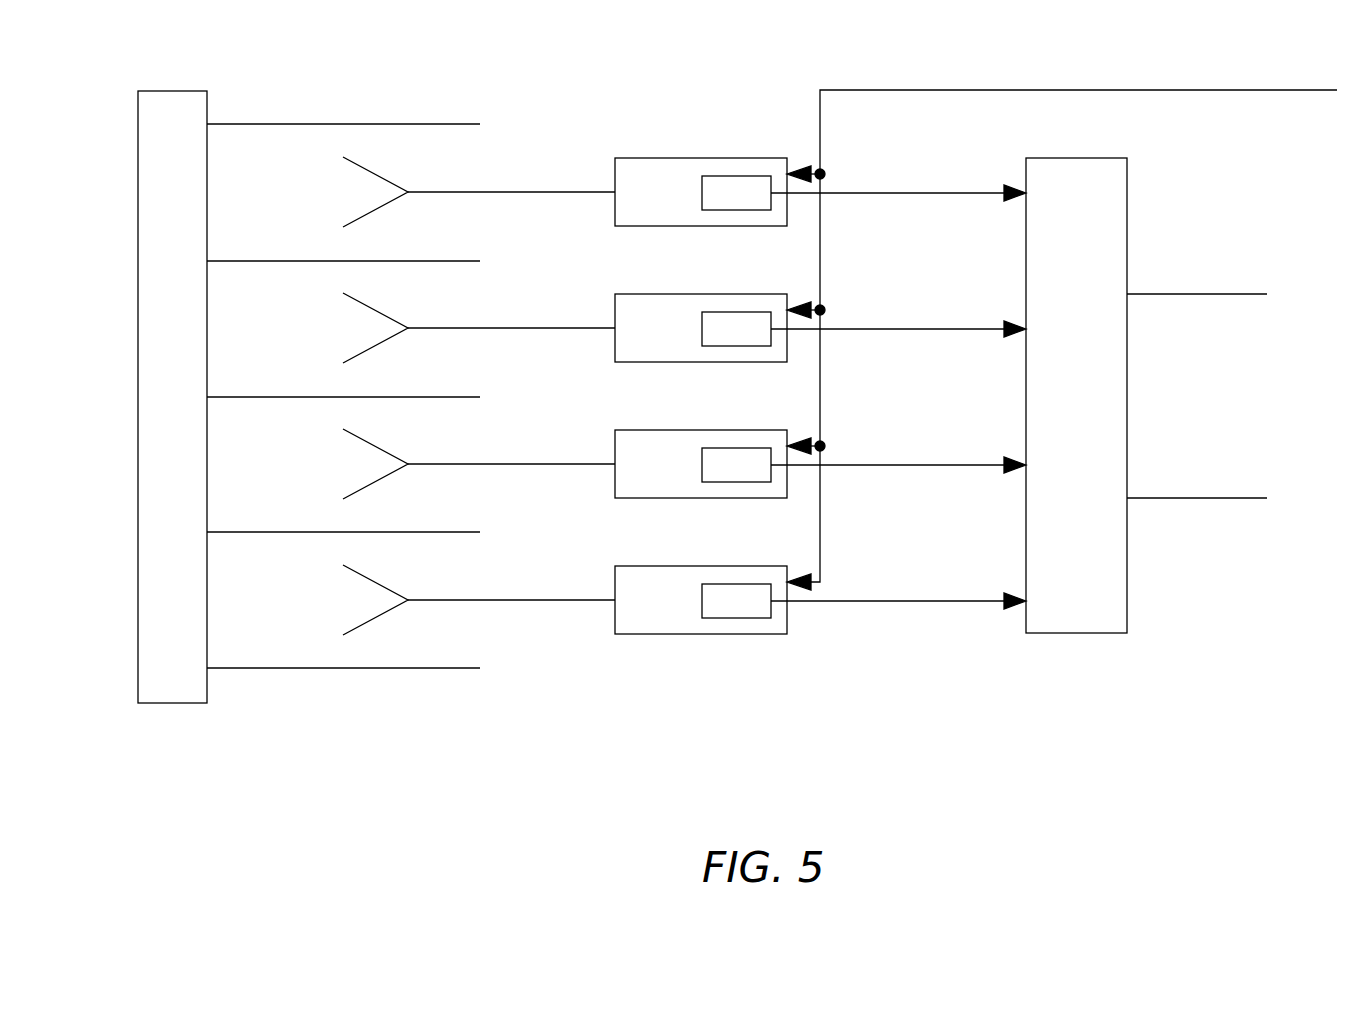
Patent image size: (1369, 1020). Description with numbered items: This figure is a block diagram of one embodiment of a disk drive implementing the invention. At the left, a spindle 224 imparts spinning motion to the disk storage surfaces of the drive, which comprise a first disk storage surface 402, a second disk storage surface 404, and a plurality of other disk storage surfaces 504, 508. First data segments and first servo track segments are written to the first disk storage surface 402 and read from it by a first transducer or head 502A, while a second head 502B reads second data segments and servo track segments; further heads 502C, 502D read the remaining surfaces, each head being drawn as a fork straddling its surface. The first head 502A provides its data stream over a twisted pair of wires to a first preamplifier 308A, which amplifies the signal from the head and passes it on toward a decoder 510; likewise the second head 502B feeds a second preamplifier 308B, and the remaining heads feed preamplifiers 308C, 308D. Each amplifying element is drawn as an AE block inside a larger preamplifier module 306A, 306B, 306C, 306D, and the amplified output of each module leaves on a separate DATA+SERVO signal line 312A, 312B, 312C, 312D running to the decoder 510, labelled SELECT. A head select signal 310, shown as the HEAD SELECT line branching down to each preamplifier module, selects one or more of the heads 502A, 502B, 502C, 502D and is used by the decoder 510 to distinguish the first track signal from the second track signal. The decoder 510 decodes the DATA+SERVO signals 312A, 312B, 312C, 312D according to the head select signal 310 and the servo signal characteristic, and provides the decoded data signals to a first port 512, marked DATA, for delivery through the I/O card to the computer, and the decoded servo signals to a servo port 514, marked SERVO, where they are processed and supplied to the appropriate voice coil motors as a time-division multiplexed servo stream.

The spindle 224 is at (207, 105).
The first disk storage surface 402 is at (442, 123).
The second disk storage surface 404 is at (423, 261).
The disk storage surface 504 is at (432, 397).
The disk storage surface 508 is at (422, 532).
The first head 502A is at (395, 180).
The second head 502B is at (395, 316).
The head 502C is at (395, 452).
The head 502D is at (395, 588).
The preamplifier 306A is at (658, 158).
The preamplifier 306B is at (658, 294).
The preamplifier 306C is at (658, 430).
The preamplifier 306D is at (658, 566).
The first preamplifier 308A is at (717, 210).
The second preamplifier 308B is at (717, 346).
The preamplifier 308C is at (717, 482).
The preamplifier 308D is at (717, 618).
The head select signal 310 is at (976, 90).
The DATA+SERVO signal 312A is at (868, 192).
The DATA+SERVO signal 312B is at (868, 328).
The DATA+SERVO signal 312C is at (868, 464).
The DATA+SERVO signal 312D is at (868, 600).
The decoder 510 is at (1127, 192).
The first port 512 is at (1127, 294).
The servo port 514 is at (1127, 498).